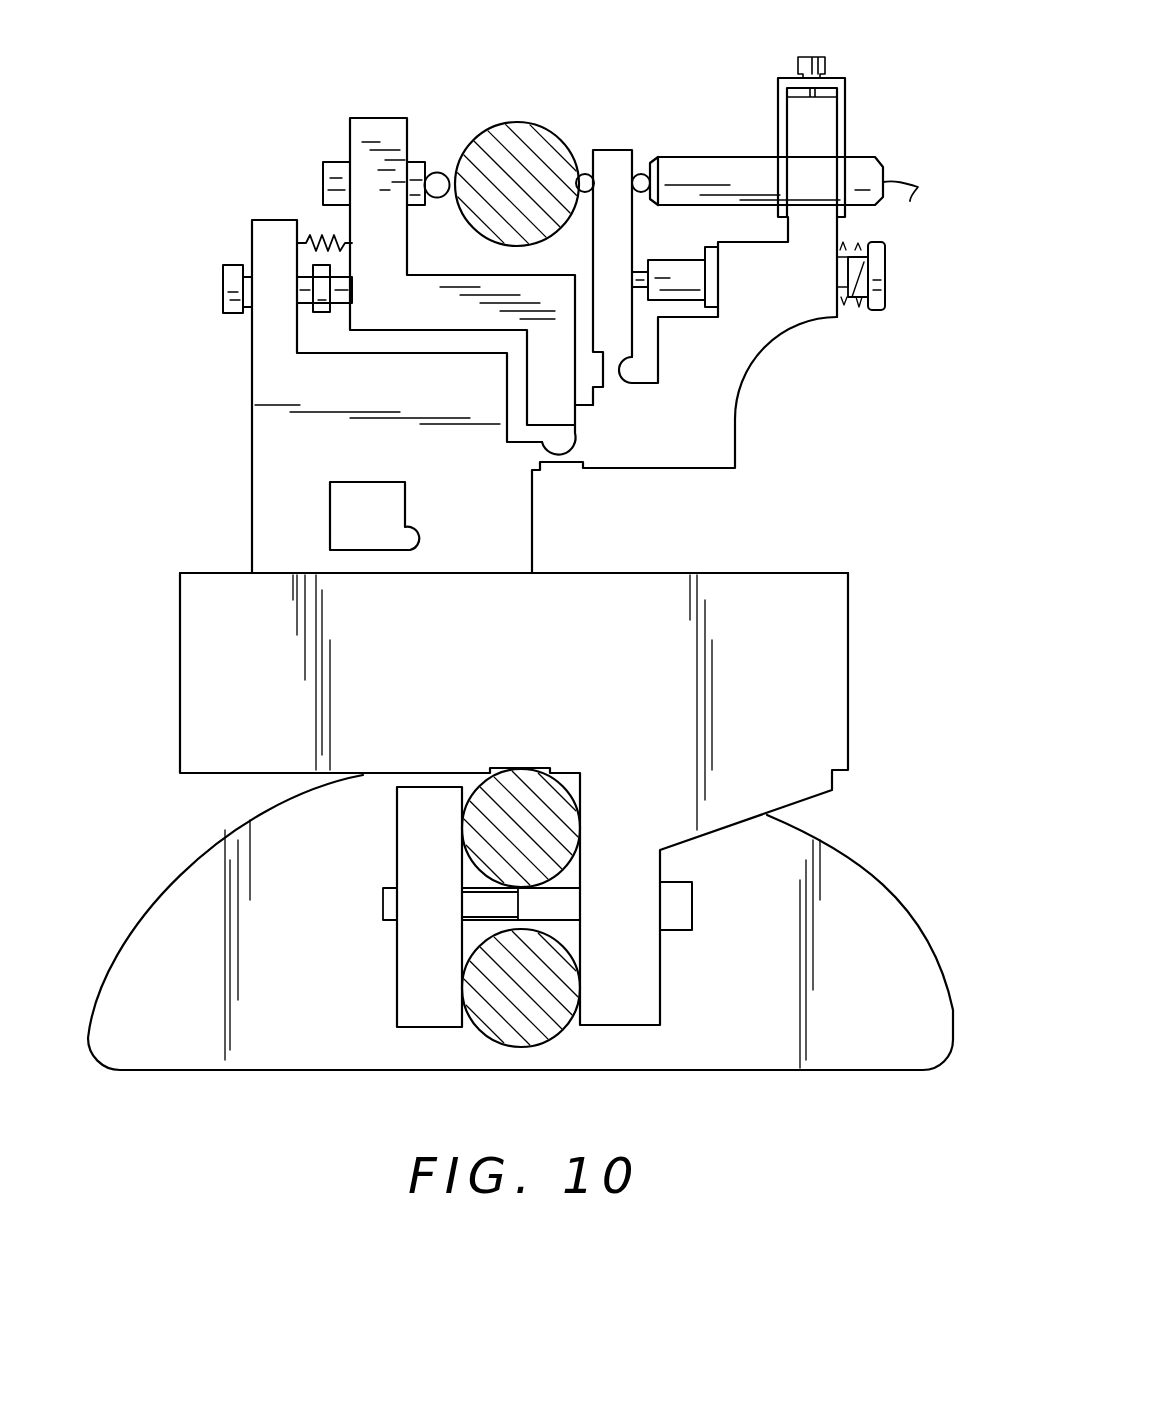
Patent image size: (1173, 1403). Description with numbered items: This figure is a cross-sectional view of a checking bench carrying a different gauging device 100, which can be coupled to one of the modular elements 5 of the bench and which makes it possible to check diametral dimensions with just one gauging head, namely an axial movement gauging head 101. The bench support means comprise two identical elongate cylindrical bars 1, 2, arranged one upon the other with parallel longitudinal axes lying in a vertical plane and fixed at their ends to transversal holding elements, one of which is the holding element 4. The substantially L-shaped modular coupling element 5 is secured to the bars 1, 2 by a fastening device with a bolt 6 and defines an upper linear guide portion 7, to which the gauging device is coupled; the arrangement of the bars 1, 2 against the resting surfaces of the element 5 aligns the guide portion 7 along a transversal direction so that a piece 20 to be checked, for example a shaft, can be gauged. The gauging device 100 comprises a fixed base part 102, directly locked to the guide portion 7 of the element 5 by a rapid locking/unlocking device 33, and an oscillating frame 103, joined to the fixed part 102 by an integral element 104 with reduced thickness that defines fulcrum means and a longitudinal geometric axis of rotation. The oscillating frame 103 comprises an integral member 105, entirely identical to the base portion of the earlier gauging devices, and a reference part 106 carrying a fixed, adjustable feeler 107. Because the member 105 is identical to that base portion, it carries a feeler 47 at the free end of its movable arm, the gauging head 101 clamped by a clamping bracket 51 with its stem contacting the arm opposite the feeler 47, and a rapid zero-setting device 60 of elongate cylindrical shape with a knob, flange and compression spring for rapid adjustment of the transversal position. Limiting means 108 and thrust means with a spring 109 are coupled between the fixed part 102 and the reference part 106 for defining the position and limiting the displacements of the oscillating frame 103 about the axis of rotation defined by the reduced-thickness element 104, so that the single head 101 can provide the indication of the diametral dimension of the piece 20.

The cylindrical bar 1 is at (470, 845).
The cylindrical bar 2 is at (470, 990).
The transversal holding element 4 is at (185, 895).
The modular coupling element 5 is at (200, 648).
The bolt 6 is at (380, 998).
The linear guide portion 7 is at (207, 572).
The piece to be checked 20 is at (520, 137).
The rapid locking/unlocking device 33 is at (355, 500).
The feeler 47 is at (585, 167).
The clamping bracket 51 is at (778, 78).
The rapid zero-setting device 60 is at (858, 313).
The gauging device 100 is at (365, 115).
The axial movement gauging head 101 is at (695, 168).
The fixed base part 102 is at (278, 373).
The oscillating frame 103 is at (760, 447).
The integral element with reduced thickness 104 is at (560, 453).
The integral member 105 is at (715, 370).
The reference part 106 is at (362, 220).
The fixed adjustable feeler 107 is at (437, 172).
The limiting means 108 is at (232, 280).
The spring 109 is at (320, 235).